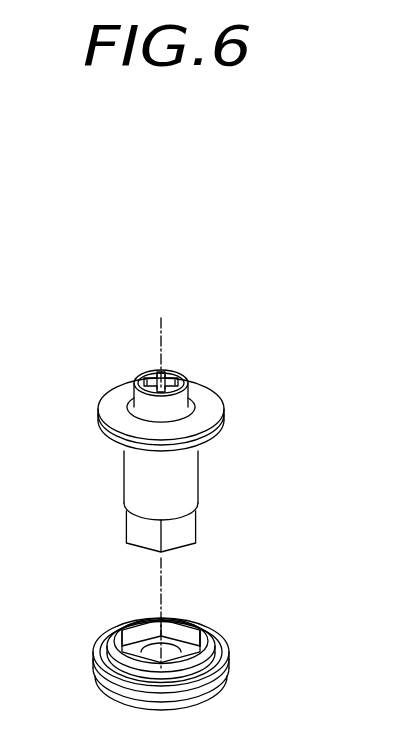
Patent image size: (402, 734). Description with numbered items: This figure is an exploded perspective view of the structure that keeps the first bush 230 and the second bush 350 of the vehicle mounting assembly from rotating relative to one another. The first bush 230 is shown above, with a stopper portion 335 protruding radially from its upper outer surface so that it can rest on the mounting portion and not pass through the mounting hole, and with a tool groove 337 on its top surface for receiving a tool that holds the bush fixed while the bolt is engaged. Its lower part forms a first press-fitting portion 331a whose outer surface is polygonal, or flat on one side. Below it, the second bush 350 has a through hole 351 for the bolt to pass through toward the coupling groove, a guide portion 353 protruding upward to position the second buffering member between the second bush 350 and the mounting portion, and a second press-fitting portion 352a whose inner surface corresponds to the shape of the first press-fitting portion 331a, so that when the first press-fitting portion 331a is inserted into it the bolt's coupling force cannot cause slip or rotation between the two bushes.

The first bush 230 is at (226, 466).
The stopper portion 335 is at (112, 407).
The tool groove 337 is at (155, 383).
The first press-fitting portion 331a is at (190, 518).
The second bush 350 is at (246, 671).
The through hole 351 is at (162, 653).
The second press-fitting portion 352a is at (184, 637).
The guide portion 353 is at (200, 663).